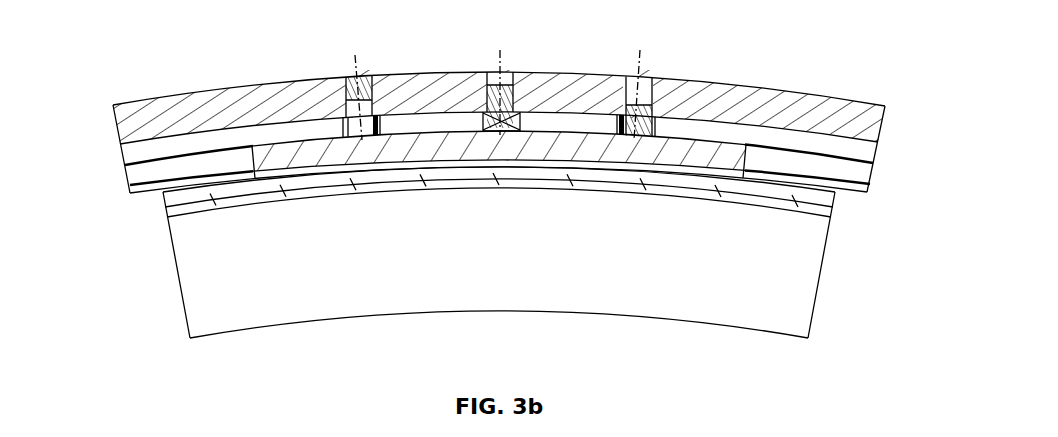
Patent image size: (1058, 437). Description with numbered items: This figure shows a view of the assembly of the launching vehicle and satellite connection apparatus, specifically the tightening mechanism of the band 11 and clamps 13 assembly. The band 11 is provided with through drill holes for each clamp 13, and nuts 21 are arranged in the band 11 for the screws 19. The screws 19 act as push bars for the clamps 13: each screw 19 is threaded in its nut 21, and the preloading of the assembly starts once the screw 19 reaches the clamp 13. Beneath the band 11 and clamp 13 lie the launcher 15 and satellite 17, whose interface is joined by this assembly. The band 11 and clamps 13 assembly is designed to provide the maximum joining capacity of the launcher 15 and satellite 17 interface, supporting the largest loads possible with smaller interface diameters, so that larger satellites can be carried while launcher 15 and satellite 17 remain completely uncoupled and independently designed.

The band 11 is at (847, 127).
The clamp 13 is at (709, 165).
The launcher 15 is at (548, 252).
The satellite 17 is at (817, 209).
The screw 19 is at (638, 110).
The nut 21 is at (490, 120).